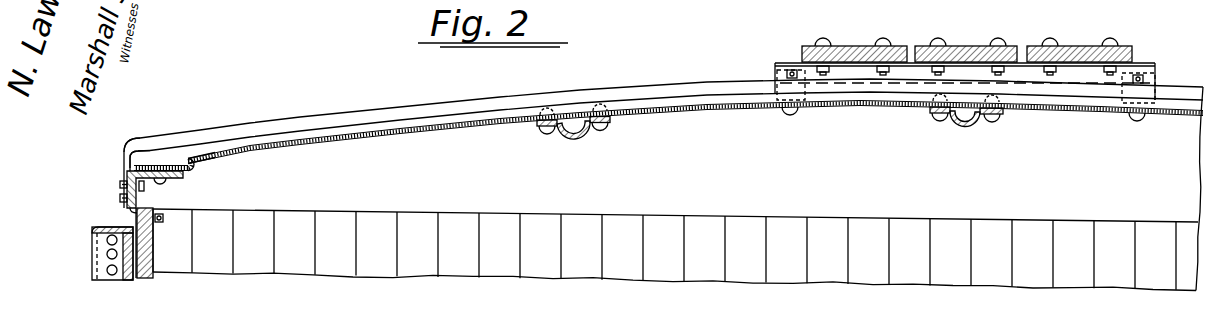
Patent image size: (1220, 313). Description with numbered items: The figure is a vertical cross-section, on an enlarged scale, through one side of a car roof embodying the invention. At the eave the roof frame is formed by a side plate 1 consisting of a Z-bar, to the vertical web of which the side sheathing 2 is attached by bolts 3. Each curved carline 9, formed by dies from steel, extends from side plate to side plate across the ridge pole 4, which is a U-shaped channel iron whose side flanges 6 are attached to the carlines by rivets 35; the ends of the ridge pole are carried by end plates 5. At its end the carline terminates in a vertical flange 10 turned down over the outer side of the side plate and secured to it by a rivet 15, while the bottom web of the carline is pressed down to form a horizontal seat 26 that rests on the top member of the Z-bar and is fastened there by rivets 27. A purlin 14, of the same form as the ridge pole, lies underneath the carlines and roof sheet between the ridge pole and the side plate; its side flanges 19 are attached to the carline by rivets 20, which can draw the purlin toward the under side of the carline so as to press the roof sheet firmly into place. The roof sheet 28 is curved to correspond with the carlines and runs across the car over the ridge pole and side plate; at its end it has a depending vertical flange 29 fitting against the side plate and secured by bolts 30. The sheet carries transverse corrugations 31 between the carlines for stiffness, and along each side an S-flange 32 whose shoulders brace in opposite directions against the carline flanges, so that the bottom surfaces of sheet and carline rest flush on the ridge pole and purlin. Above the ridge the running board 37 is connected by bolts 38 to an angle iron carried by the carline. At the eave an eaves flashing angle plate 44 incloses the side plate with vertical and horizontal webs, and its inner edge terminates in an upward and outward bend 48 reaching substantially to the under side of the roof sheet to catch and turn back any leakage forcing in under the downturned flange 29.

The side plate 1 is at (142, 198).
The side sheathing 2 is at (145, 278).
The bolt 3 is at (162, 223).
The ridge pole 4 is at (963, 126).
The end plate 5 is at (678, 189).
The side flange of ridge pole 6 is at (933, 110).
The carline 9 is at (707, 82).
The vertical flange of carline 10 is at (123, 148).
The purlin 14 is at (577, 141).
The rivet 15 is at (133, 199).
The side flange of purlin 19 is at (545, 127).
The rivet 20 is at (550, 132).
The horizontal seat 26 is at (193, 163).
The rivet 27 is at (160, 150).
The roof sheet 28 is at (425, 138).
The depending vertical flange 29 is at (122, 178).
The bolt 30 is at (122, 190).
The transverse corrugation 31 is at (357, 131).
The S-flange 32 is at (262, 135).
The rivet 35 is at (940, 118).
The running board 37 is at (869, 46).
The bolt 38 is at (1048, 46).
The eaves flashing angle plate 44 is at (189, 168).
The upward and outward bend 48 is at (187, 157).